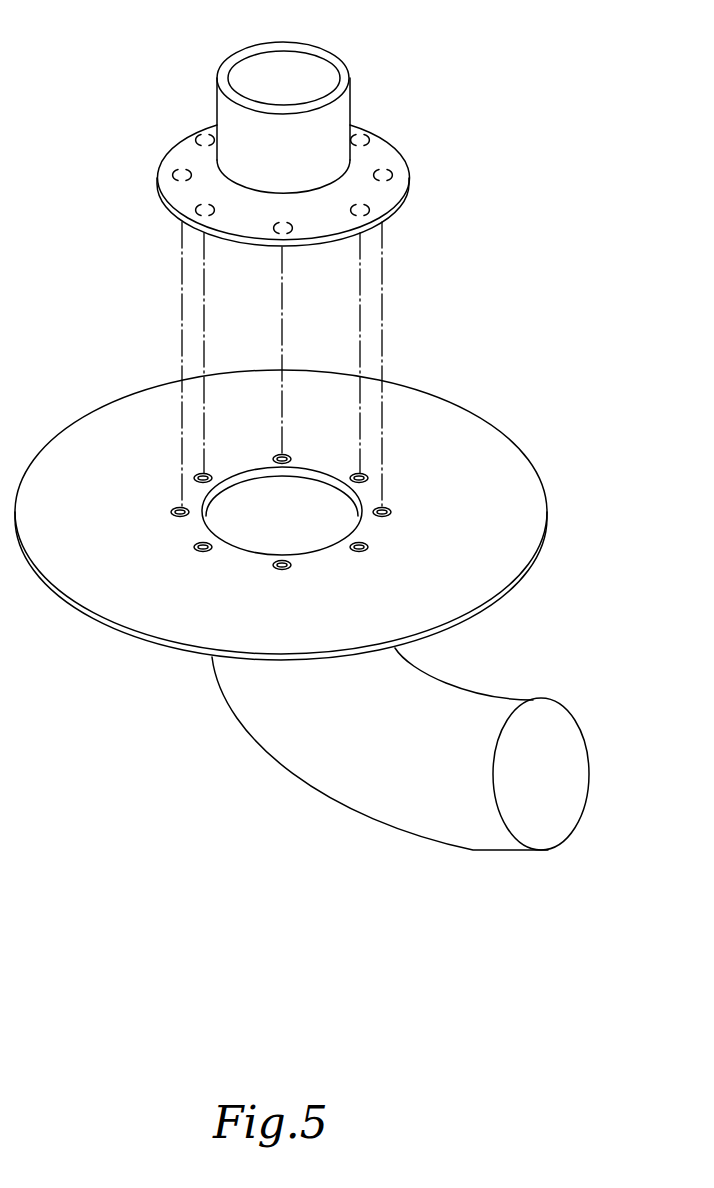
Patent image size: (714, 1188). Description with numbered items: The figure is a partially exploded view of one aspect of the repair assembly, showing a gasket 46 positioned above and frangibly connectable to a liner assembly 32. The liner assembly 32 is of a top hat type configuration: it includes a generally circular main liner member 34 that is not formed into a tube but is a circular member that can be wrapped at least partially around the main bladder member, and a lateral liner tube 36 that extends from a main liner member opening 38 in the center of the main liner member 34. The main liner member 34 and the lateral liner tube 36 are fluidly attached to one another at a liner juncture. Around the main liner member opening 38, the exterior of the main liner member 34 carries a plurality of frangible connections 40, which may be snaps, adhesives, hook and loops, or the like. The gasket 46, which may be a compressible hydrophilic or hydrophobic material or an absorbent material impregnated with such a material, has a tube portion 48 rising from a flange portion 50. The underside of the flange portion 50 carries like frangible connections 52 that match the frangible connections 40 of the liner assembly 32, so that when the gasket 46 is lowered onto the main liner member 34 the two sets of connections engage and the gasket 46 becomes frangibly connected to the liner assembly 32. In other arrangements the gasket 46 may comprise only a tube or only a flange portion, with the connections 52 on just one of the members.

The liner assembly 32 is at (306, 610).
The main liner member 34 is at (525, 495).
The lateral liner tube 36 is at (438, 688).
The main liner member opening 38 is at (330, 477).
The frangible connections 40 is at (176, 508).
The gasket 46 is at (284, 137).
The tube portion 48 is at (233, 57).
The flange portion 50 is at (183, 158).
The frangible connections 52 is at (388, 173).